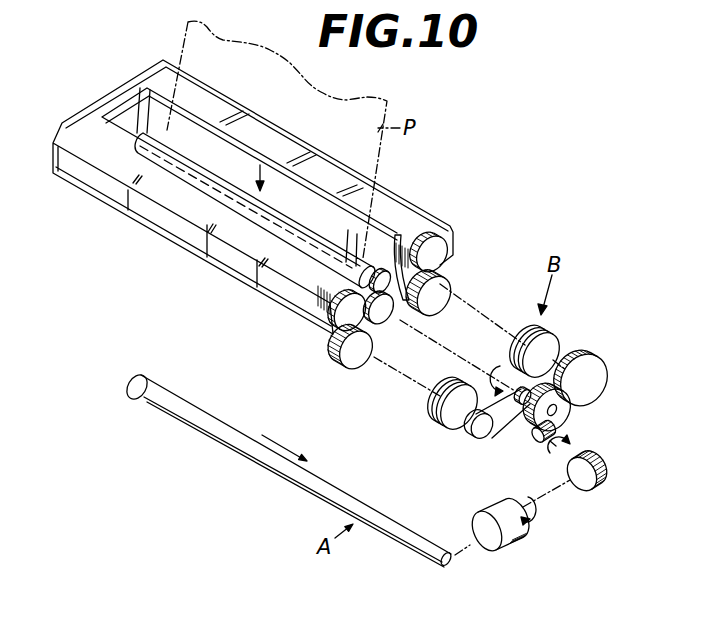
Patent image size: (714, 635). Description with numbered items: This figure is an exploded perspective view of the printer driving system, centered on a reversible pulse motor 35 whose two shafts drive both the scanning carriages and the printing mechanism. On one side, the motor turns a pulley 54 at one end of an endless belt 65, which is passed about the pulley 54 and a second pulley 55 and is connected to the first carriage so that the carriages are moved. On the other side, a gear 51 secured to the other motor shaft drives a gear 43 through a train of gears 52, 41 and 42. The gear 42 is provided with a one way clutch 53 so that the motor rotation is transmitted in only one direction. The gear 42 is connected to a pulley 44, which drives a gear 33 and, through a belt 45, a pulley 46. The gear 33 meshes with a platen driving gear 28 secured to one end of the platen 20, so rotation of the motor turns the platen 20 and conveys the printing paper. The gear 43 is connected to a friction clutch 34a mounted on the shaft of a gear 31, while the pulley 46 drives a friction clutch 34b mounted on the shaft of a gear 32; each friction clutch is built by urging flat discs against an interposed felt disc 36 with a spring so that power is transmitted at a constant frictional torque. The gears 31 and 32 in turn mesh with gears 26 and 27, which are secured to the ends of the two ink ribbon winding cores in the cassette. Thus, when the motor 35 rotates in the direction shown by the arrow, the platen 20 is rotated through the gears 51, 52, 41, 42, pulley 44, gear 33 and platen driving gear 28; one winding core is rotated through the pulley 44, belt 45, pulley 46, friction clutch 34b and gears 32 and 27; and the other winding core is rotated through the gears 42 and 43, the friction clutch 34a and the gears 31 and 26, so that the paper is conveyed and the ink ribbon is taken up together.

The platen 20 is at (350, 254).
The gear 26 is at (440, 248).
The gear 27 is at (340, 319).
The platen driving gear 28 is at (395, 232).
The gear 31 is at (433, 297).
The gear 32 is at (327, 355).
The gear 33 is at (383, 312).
The friction clutch 34a is at (543, 332).
The friction clutch 34b is at (440, 427).
The reversible pulse motor 35 is at (513, 533).
The felt disc 36 is at (432, 407).
The gear 41 is at (538, 443).
The gear 42 is at (558, 420).
The gear 43 is at (597, 360).
The pulley 44 is at (522, 401).
The belt 45 is at (487, 407).
The pulley 46 is at (478, 431).
The gear 51 is at (592, 485).
The gear 52 is at (592, 458).
The one way clutch 53 is at (556, 410).
The pulley 54 is at (449, 563).
The pulley 55 is at (123, 387).
The endless belt 65 is at (290, 482).